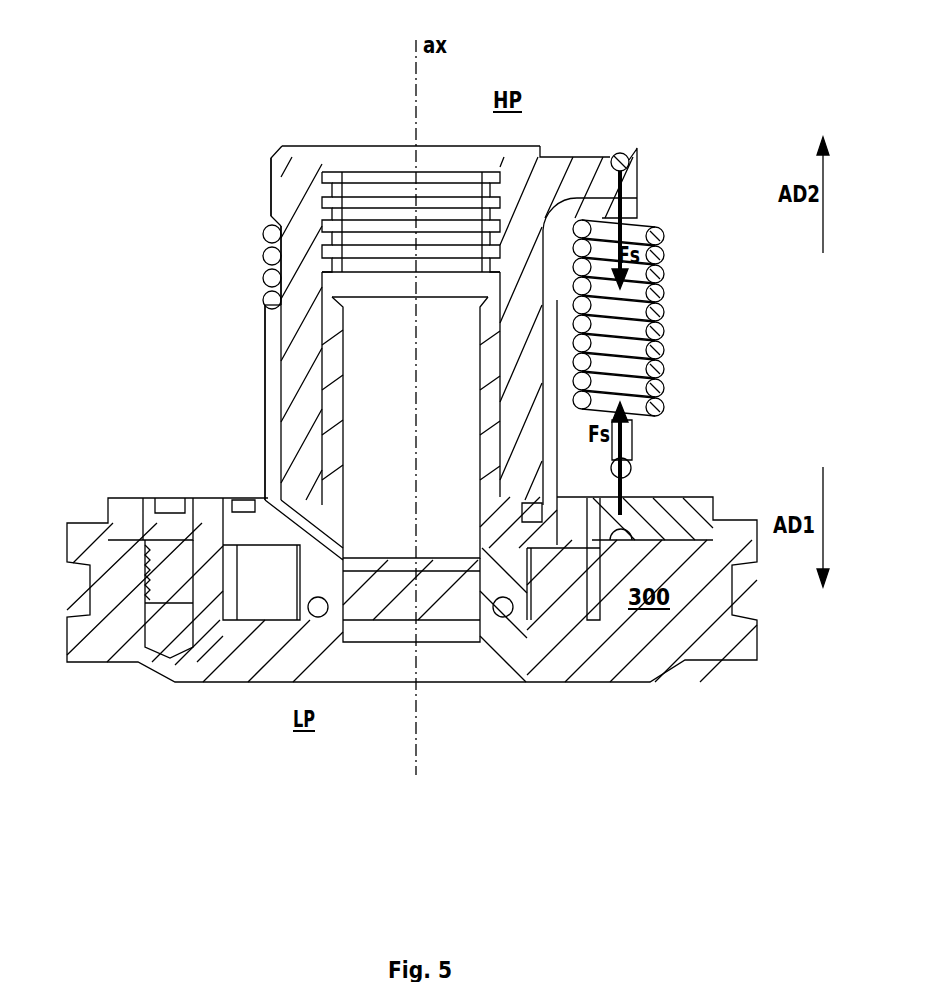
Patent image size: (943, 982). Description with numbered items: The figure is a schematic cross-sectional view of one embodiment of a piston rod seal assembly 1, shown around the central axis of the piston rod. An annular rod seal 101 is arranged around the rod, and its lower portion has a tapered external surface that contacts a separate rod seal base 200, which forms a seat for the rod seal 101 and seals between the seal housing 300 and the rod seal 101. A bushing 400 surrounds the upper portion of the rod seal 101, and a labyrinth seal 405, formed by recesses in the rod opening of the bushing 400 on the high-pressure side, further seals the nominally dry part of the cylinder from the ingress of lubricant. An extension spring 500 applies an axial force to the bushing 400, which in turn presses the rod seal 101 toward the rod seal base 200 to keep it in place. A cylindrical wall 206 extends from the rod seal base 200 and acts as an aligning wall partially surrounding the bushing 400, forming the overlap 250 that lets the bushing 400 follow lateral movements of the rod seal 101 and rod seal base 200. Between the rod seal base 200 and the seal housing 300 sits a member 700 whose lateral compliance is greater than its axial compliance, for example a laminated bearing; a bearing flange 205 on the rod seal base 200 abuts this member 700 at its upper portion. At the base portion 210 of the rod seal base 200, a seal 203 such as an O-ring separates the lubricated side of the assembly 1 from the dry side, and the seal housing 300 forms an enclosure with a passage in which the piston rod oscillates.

The rod seal assembly 1 is at (358, 83).
The bushing 400 is at (288, 188).
The labyrinth seal 405 is at (397, 177).
The spring 500 is at (265, 237).
The rod seal 101 is at (330, 356).
The cylindrical wall 206 is at (268, 380).
The rod seal base 200 is at (267, 432).
The bearing flange 205 is at (250, 527).
The member 700 is at (145, 535).
The seal housing 300 is at (412, 589).
The overlap 250 is at (562, 472).
The base portion 210 is at (303, 584).
The seal 203 is at (500, 618).